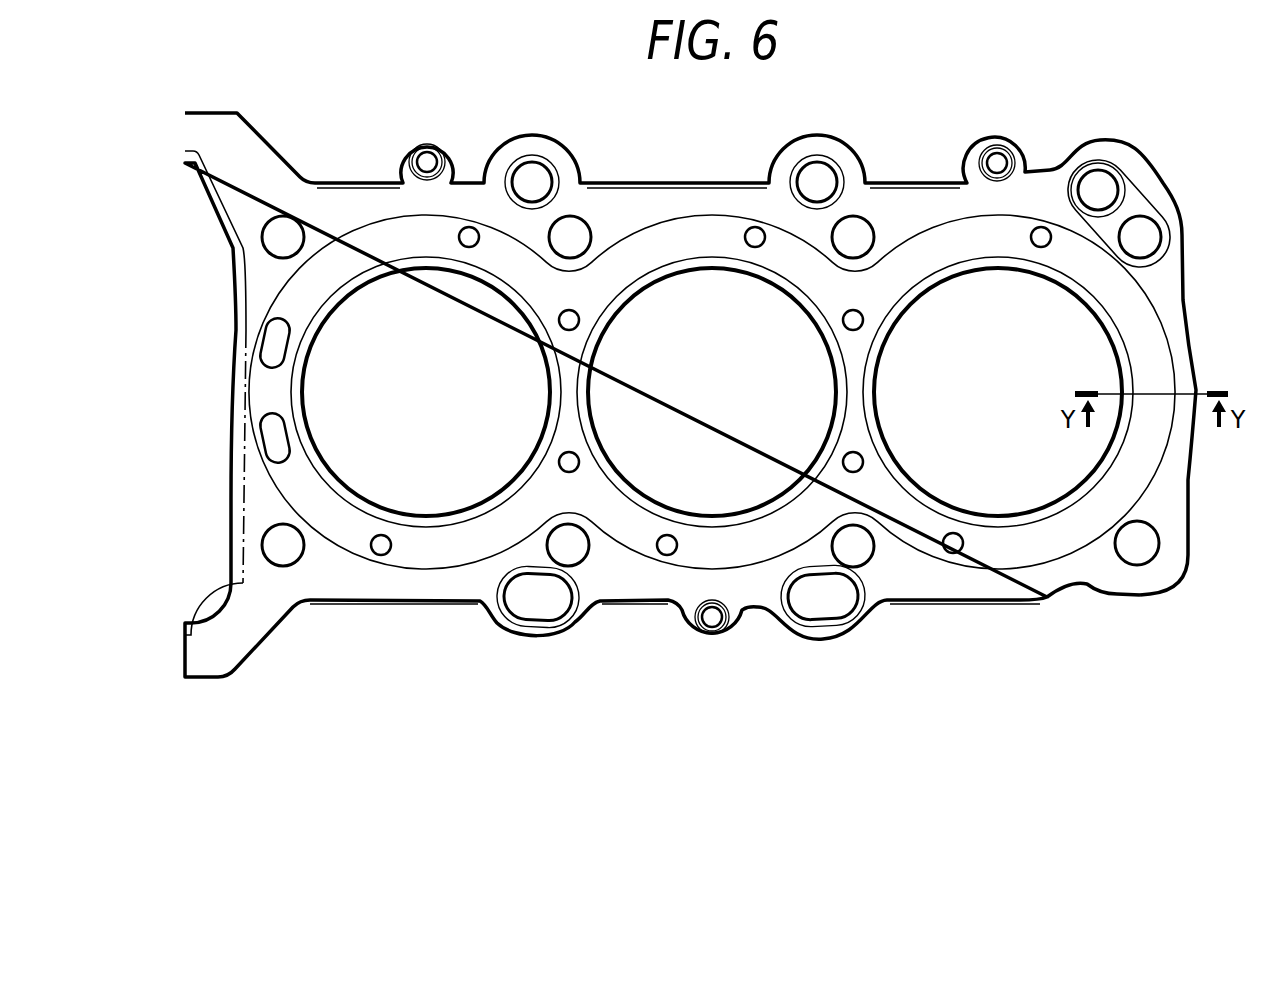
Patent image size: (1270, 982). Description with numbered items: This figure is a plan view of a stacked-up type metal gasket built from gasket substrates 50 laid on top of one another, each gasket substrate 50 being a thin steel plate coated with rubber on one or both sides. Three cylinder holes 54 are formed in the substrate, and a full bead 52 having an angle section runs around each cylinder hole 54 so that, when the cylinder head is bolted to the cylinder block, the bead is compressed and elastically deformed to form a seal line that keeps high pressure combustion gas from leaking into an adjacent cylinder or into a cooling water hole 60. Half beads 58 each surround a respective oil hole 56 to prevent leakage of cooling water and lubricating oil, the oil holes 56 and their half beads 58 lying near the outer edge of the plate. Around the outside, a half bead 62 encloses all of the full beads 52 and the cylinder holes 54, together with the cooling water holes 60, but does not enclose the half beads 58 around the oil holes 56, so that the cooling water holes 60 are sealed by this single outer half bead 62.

The gasket substrate 50 is at (235, 244).
The full bead 52 is at (358, 277).
The cylinder hole 54 is at (533, 332).
The water hole 56 is at (532, 182).
The half bead 58 is at (817, 152).
The cooling water hole 60 is at (282, 347).
The half bead 62 is at (1073, 585).